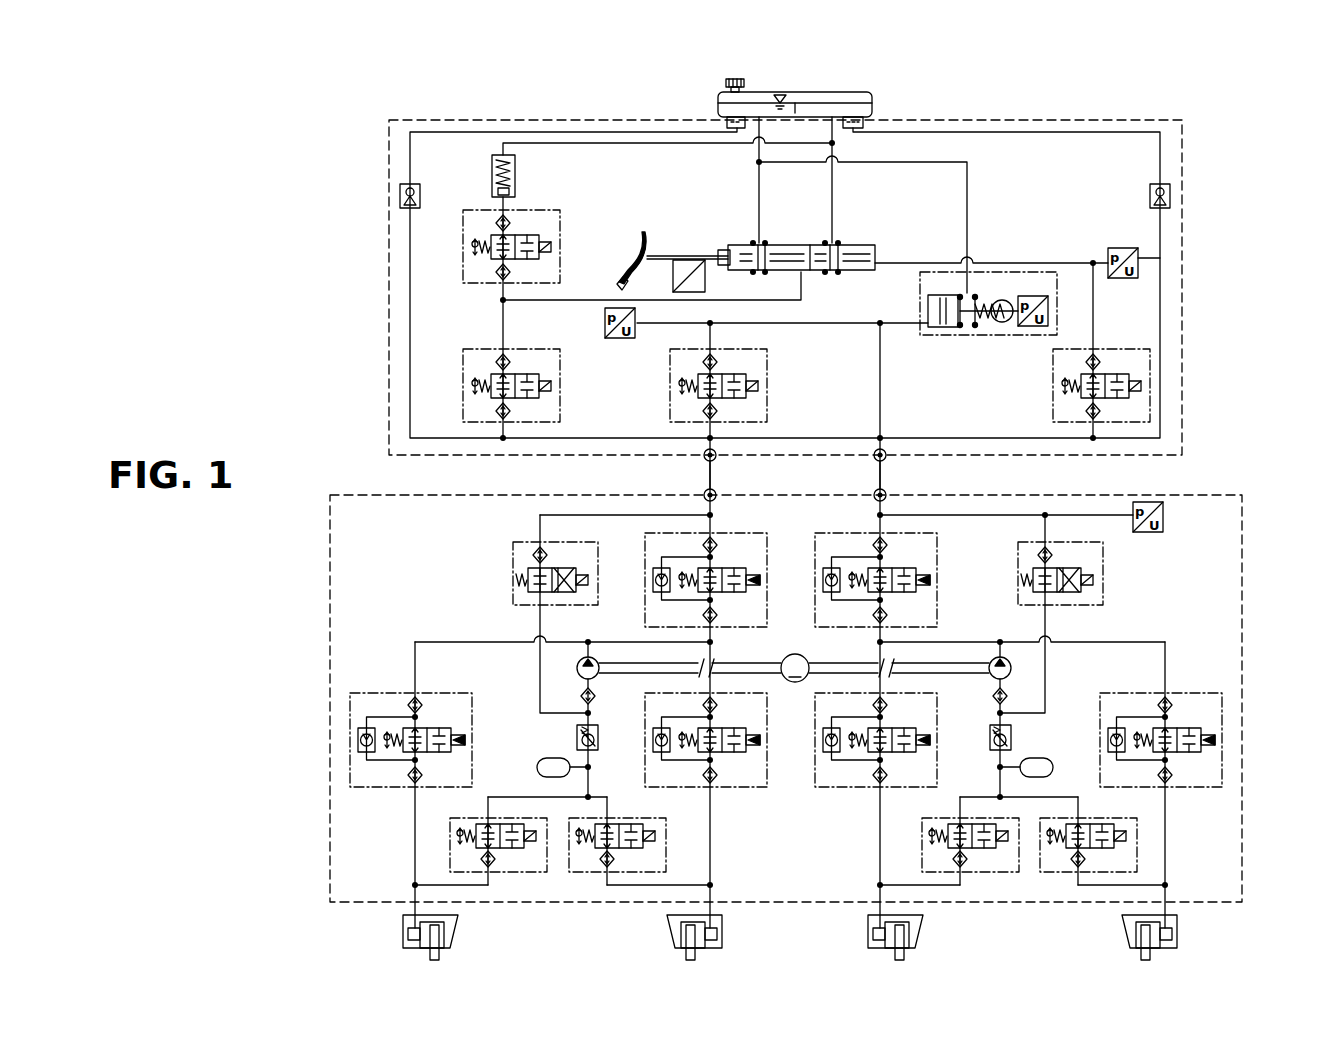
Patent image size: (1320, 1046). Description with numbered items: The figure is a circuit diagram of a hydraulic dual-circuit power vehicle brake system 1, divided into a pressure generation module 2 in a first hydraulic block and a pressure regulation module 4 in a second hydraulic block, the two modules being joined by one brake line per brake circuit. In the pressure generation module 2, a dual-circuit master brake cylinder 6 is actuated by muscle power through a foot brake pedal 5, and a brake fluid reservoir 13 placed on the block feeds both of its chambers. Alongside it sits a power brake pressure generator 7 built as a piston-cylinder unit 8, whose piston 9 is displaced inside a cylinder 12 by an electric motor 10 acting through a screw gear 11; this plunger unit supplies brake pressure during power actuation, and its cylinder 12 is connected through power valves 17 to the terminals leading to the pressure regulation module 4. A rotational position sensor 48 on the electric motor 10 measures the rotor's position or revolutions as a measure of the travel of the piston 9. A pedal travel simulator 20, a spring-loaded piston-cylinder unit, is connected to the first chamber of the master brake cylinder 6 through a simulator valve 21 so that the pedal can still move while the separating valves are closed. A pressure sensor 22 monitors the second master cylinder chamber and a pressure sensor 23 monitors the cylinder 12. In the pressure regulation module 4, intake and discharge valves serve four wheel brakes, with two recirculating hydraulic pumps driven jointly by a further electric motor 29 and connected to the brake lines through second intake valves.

The hydraulic dual-circuit power vehicle brake system 1 is at (335, 93).
The pressure generation module 2 is at (1183, 150).
The pressure regulation module 4 is at (1243, 592).
The foot brake pedal 5 is at (616, 284).
The dual-circuit master brake cylinder 6 is at (793, 243).
The power brake pressure generator 7 is at (984, 290).
The piston-cylinder unit 8 is at (988, 311).
The piston 9 is at (957, 315).
The electric motor 10 is at (1013, 291).
The screw gear 11 is at (985, 322).
The cylinder 12 is at (948, 328).
The brake fluid reservoir 13 is at (820, 92).
The power valve 17 is at (738, 395).
The pedal travel simulator 20 is at (515, 172).
The simulator valve 21 is at (540, 243).
The pressure sensor 22 is at (1140, 256).
The pressure sensor 23 is at (620, 339).
The electric motor 29 is at (795, 652).
The rotational position sensor 48 is at (1050, 305).